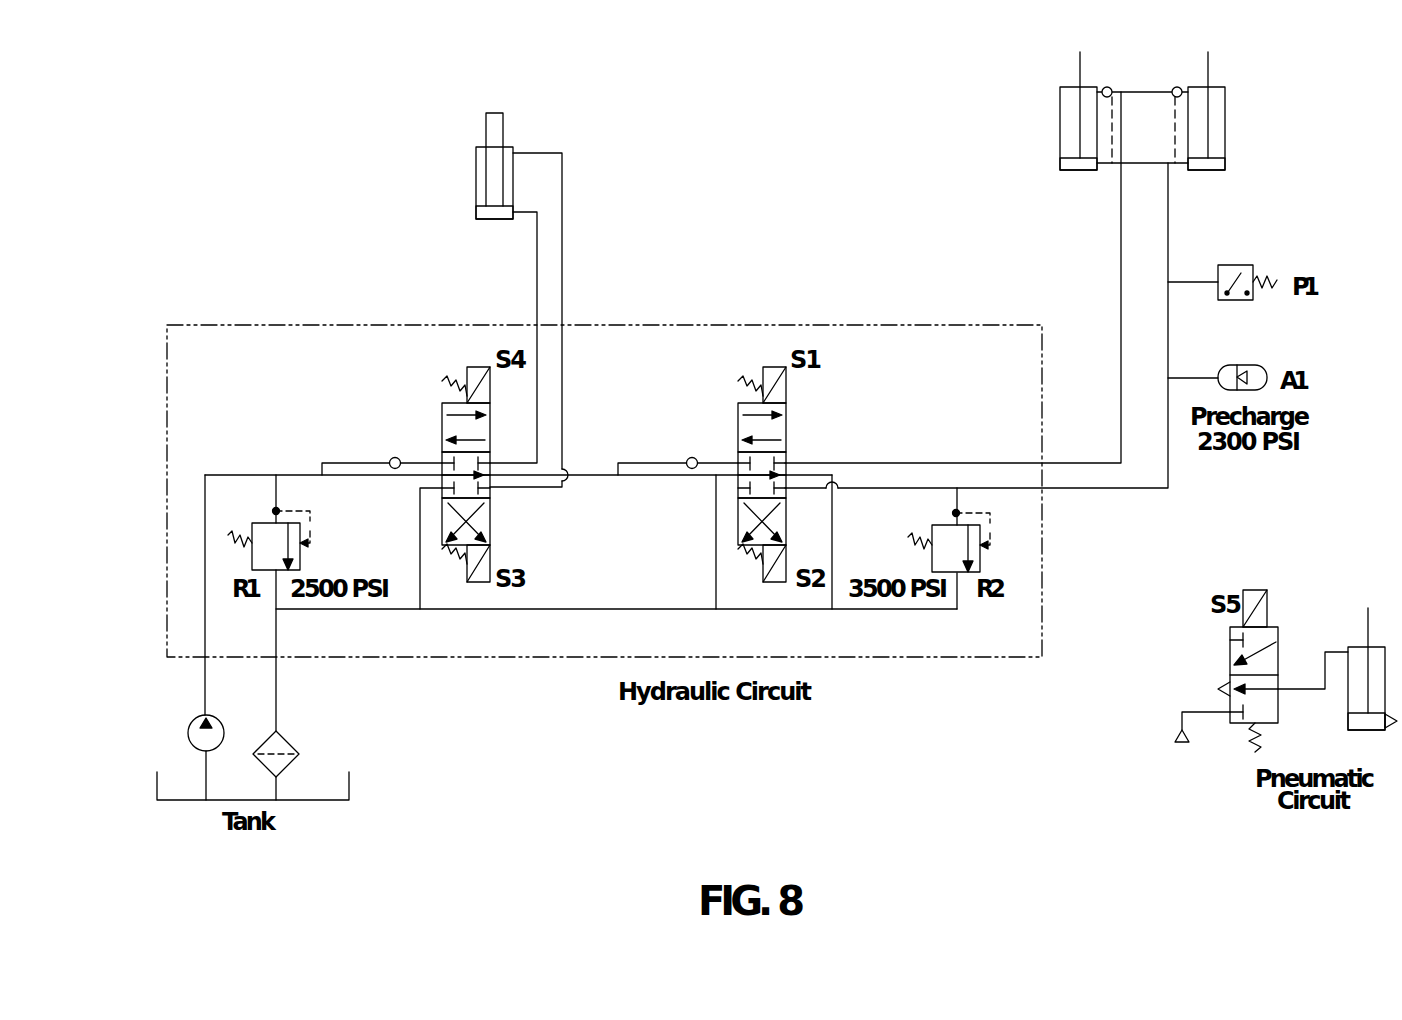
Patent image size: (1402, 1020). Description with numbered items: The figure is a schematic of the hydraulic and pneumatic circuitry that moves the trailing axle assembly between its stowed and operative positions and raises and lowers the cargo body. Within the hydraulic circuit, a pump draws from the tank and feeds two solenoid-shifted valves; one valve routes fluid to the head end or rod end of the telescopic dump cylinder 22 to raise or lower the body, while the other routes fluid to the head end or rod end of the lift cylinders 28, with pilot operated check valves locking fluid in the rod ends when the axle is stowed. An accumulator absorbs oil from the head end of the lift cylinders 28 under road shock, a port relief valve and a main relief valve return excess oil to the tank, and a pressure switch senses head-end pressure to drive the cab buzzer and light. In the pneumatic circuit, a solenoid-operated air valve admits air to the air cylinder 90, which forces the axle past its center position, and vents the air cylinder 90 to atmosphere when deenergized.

The telescopic dump cylinder 22 is at (520, 140).
The lift cylinders 28 is at (1230, 118).
The air cylinder 90 is at (1345, 640).